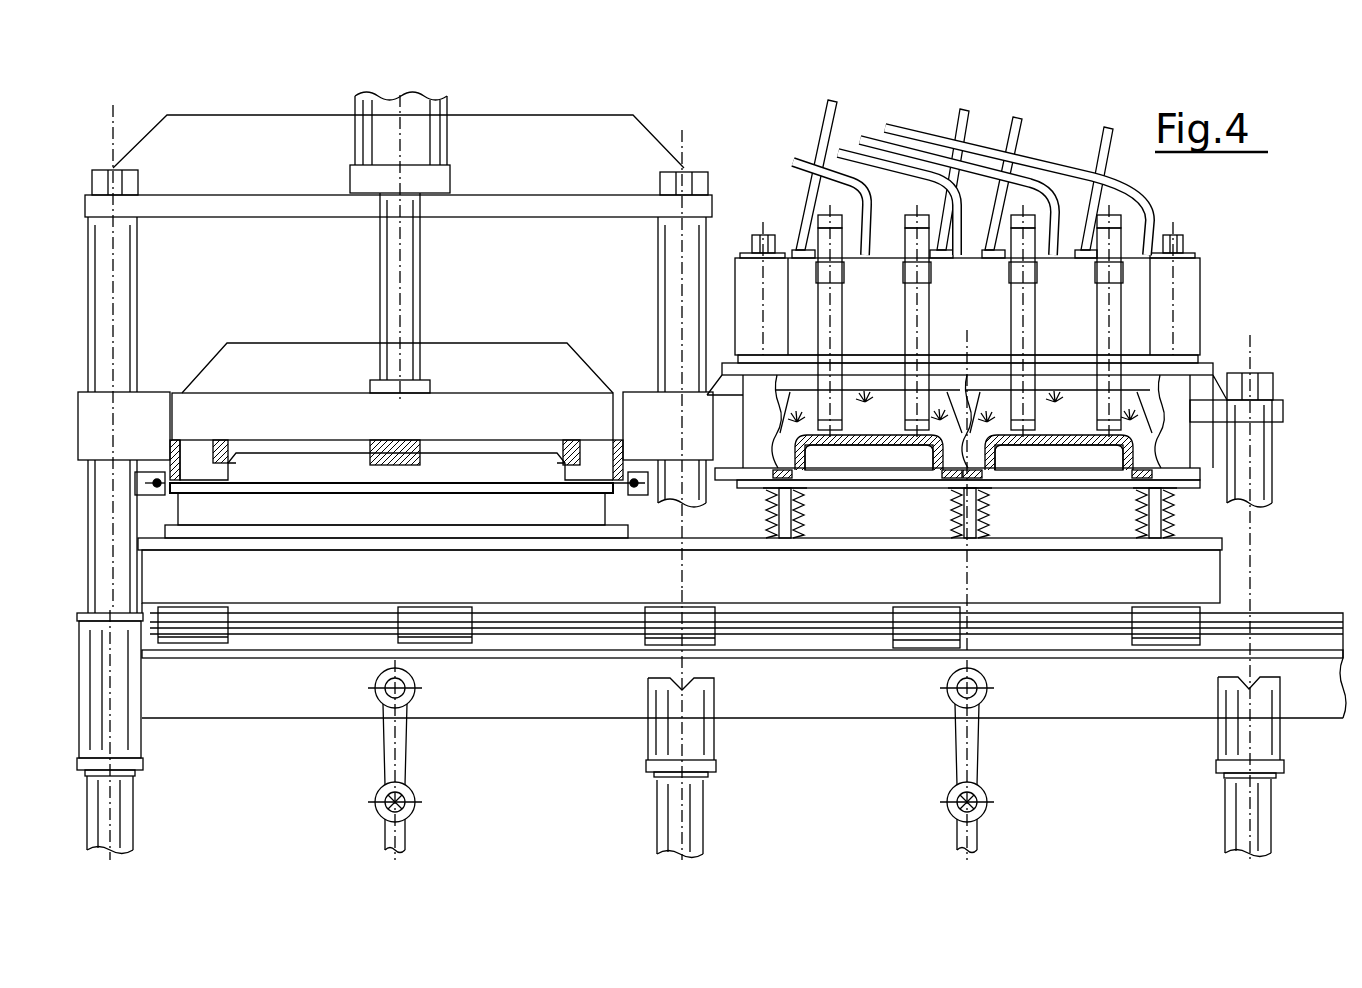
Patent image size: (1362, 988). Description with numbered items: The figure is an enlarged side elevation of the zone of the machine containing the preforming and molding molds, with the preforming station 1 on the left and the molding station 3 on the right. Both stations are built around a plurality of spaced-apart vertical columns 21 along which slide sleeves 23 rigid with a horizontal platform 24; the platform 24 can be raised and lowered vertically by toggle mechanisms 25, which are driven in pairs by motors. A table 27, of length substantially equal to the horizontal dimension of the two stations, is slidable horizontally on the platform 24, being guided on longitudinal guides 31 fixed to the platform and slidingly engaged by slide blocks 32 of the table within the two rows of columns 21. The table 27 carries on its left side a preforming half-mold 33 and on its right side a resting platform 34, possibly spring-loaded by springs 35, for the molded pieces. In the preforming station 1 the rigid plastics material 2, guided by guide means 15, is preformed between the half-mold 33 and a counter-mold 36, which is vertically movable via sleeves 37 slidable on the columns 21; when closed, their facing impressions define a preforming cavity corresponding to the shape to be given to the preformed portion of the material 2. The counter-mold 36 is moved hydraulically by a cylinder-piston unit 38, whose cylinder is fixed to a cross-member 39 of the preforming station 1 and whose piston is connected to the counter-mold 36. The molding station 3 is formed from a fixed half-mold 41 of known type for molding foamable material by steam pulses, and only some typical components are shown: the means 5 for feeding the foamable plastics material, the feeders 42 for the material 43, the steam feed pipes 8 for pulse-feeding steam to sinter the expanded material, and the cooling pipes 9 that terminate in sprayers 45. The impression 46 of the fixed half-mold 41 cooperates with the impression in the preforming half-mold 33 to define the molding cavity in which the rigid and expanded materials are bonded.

The preforming station 1 is at (142, 105).
The rigid plastics material 2 is at (593, 493).
The molding station 3 is at (1265, 356).
The means for feeding the foamable plastics material 5 is at (905, 124).
The means for pulse-feeding steam 8 is at (955, 115).
The feed means for a cooling fluid 9 is at (822, 113).
The guide means 15 is at (140, 508).
The vertical columns 21 is at (120, 820).
The sleeves 23 is at (126, 742).
The horizontal platform 24 is at (841, 712).
The toggle mechanisms 25 is at (372, 812).
The table 27 is at (616, 588).
The longitudinal guides 31 is at (1283, 625).
The slide blocks 32 is at (445, 640).
The preforming half-mold 33 is at (330, 492).
The resting platform 34 is at (880, 487).
The springs 35 is at (985, 515).
The counter-mold 36 is at (290, 430).
The sleeves 37 is at (88, 420).
The cylinder-piston unit 38 is at (452, 140).
The cross-member 39 is at (248, 202).
The fixed half-mold 41 is at (1167, 392).
The feeders 42 is at (1020, 315).
The material 43 is at (810, 455).
The sprayers 45 is at (853, 390).
The impression 46 is at (960, 472).